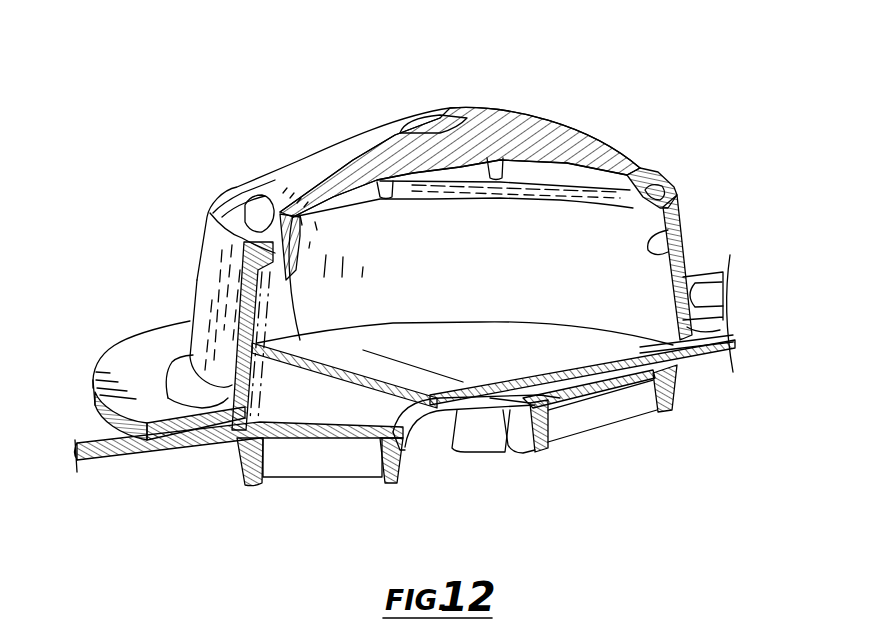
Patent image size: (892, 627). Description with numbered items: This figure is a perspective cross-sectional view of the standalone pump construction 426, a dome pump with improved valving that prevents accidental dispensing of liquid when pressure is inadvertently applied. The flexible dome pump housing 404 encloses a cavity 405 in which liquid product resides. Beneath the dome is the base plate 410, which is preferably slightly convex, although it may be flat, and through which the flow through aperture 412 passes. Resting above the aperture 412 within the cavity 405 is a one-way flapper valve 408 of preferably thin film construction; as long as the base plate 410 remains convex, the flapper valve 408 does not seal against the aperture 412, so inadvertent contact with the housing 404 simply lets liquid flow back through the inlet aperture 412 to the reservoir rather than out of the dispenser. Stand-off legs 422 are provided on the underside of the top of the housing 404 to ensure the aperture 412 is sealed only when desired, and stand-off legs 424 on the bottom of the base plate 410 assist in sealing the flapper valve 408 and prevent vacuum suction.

The dome pump housing 404 is at (355, 160).
The cavity 405 is at (683, 242).
The one-way flapper valve 408 is at (296, 290).
The base plate 410 is at (590, 397).
The flow through aperture 412 is at (478, 412).
The stand-off legs 422 is at (522, 158).
The stand-off legs 424 is at (380, 455).
The standalone pump construction 426 is at (650, 107).